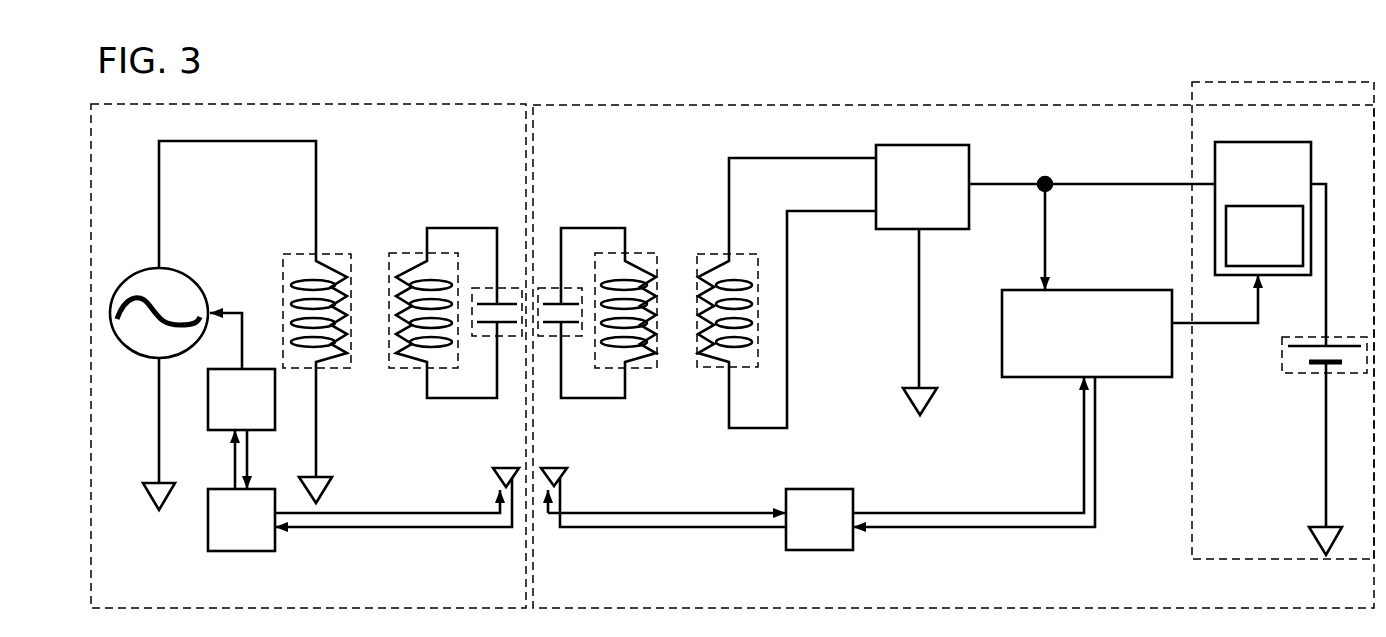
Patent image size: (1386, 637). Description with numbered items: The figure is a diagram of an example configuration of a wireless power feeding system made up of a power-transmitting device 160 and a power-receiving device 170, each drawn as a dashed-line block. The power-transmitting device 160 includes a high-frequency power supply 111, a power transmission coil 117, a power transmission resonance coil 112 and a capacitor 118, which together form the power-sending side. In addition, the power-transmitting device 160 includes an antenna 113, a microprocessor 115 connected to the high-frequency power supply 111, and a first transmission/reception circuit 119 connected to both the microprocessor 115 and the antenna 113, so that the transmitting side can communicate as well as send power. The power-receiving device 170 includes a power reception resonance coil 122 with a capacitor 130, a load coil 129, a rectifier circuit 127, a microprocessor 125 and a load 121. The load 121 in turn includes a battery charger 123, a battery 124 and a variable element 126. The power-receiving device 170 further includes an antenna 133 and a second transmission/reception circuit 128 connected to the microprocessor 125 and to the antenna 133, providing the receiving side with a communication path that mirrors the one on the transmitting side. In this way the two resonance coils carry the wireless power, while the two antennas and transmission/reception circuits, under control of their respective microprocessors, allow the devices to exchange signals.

The high-frequency power supply 111 is at (152, 271).
The power transmission resonance coil 112 is at (416, 253).
The antenna 113 is at (496, 478).
The microprocessor 115 is at (241, 399).
The power transmission coil 117 is at (330, 254).
The capacitor 118 is at (485, 337).
The first transmission/reception circuit 119 is at (241, 520).
The load 121 is at (1262, 82).
The power reception resonance coil 122 is at (636, 254).
The battery charger 123 is at (1263, 208).
The battery 124 is at (1302, 374).
The microprocessor 125 is at (1087, 333).
The variable element 126 is at (1264, 236).
The rectifier circuit 127 is at (922, 187).
The second transmission/reception circuit 128 is at (819, 519).
The load coil 129 is at (722, 254).
The capacitor 130 is at (572, 337).
The antenna 133 is at (566, 478).
The power-transmitting device 160 is at (144, 600).
The power-receiving device 170 is at (587, 600).